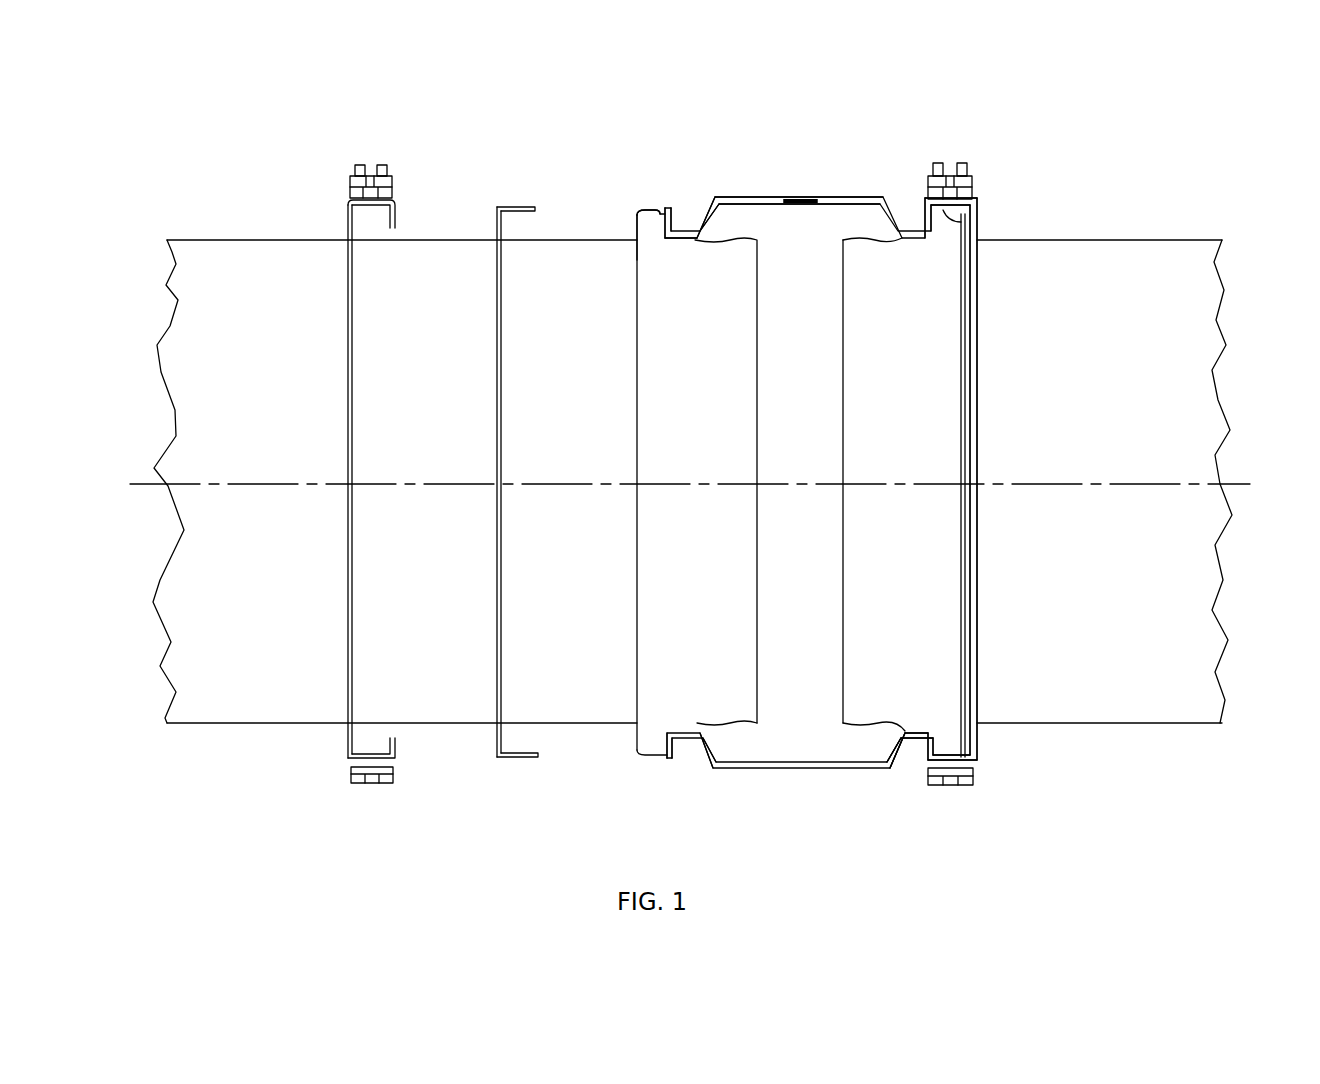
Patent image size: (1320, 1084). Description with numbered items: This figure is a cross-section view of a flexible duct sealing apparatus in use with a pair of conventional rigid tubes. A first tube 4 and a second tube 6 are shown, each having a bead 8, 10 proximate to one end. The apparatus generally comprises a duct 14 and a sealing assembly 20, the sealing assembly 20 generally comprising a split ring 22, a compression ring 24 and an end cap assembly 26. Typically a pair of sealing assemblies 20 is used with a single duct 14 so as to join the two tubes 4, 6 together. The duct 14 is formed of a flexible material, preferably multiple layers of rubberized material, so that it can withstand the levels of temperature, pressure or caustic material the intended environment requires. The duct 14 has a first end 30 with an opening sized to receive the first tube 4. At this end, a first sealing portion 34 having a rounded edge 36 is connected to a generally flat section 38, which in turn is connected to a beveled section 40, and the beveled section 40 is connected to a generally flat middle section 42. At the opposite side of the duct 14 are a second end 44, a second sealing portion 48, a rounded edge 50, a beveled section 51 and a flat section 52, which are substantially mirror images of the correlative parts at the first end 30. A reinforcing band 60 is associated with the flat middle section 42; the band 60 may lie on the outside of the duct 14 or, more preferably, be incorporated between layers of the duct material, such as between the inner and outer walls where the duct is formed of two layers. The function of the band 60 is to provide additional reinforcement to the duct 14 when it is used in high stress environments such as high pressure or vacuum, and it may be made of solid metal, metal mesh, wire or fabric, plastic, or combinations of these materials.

The first tube 4 is at (1098, 725).
The second tube 6 is at (248, 725).
The bead 8 is at (717, 240).
The bead 10 is at (887, 232).
The duct 14 is at (766, 182).
The sealing assembly 20 is at (991, 449).
The split ring 22 is at (680, 218).
The compression ring 24 is at (485, 195).
The end cap assembly 26 is at (341, 183).
The first end 30 is at (932, 240).
The first sealing portion 34 is at (975, 755).
The rounded edge 36 is at (975, 228).
The flat section 38 is at (922, 728).
The beveled section 40 is at (897, 747).
The flat middle section 42 is at (835, 196).
The second end 44 is at (665, 243).
The second sealing portion 48 is at (632, 216).
The rounded edge 50 is at (653, 210).
The beveled section 51 is at (697, 215).
The flat section 52 is at (683, 727).
The reinforcing band 60 is at (805, 197).